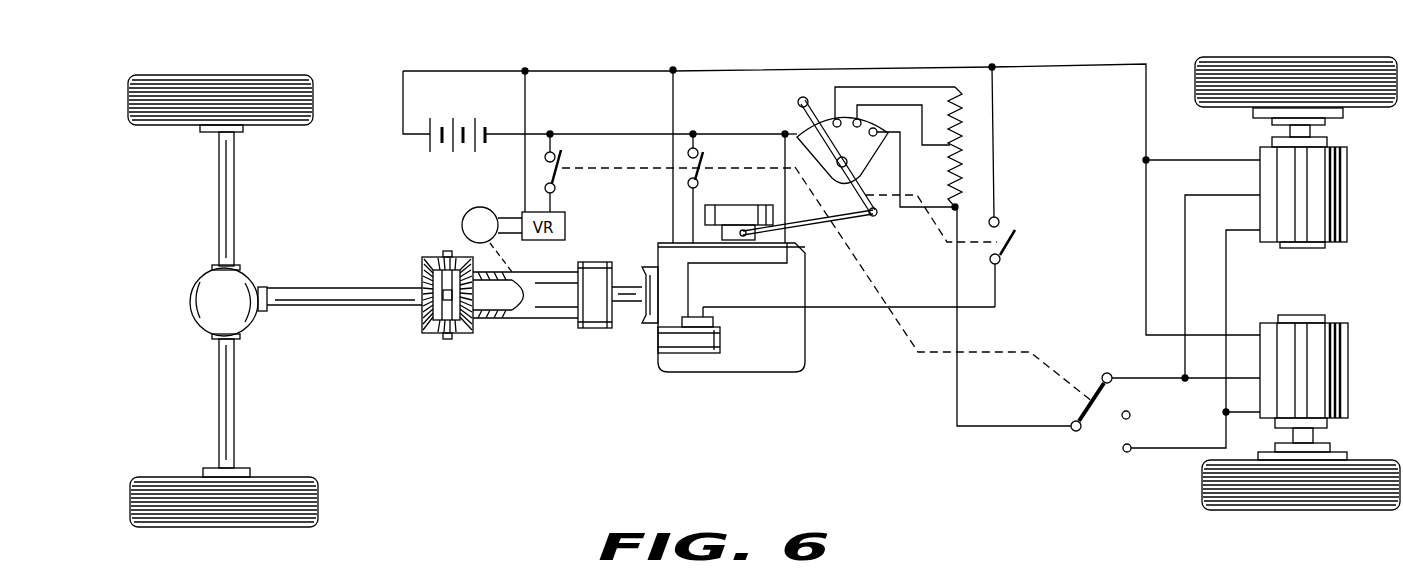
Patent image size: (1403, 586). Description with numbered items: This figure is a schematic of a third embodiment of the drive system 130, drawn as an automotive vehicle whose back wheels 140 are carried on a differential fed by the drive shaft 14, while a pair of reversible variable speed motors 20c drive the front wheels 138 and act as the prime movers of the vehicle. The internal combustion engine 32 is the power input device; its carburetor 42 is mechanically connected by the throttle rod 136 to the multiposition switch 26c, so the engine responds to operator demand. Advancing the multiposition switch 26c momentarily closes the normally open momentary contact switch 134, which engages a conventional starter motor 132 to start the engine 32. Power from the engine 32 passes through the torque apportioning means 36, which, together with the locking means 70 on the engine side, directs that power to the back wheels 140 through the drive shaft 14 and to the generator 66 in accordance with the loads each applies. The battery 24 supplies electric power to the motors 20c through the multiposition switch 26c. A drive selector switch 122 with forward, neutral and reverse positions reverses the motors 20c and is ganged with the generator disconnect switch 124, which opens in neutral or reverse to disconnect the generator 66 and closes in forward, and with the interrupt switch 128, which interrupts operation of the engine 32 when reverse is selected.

The drive shaft 14 is at (378, 306).
The reversible variable speed motors 20c is at (1347, 233).
The battery 24 is at (447, 152).
The multiposition switch 26c is at (830, 116).
The internal combustion engine 32 is at (790, 337).
The torque apportioning means 36 is at (453, 338).
The carburetor 42 is at (738, 228).
The generator 66 is at (467, 212).
The locking means 70 is at (591, 330).
The drive selector switch 122 is at (1096, 452).
The generator disconnect switch 124 is at (560, 178).
The interrupt switch 128 is at (703, 155).
The drive system 130 is at (722, 338).
The starter motor 132 is at (660, 338).
The momentary contact switch 134 is at (1013, 247).
The throttle rod 136 is at (858, 218).
The front wheels 138 is at (1370, 103).
The back wheels 140 is at (153, 126).